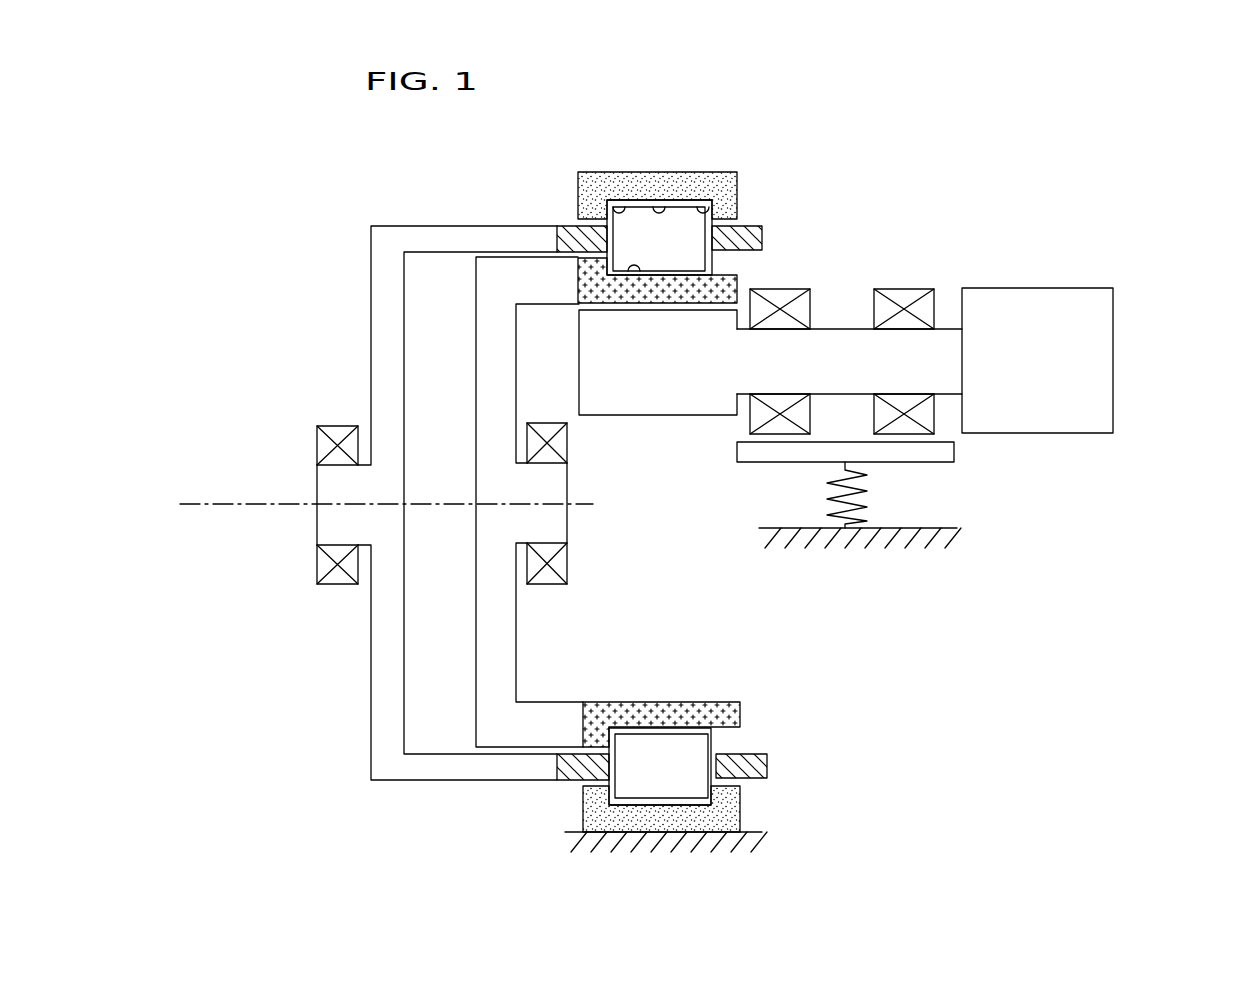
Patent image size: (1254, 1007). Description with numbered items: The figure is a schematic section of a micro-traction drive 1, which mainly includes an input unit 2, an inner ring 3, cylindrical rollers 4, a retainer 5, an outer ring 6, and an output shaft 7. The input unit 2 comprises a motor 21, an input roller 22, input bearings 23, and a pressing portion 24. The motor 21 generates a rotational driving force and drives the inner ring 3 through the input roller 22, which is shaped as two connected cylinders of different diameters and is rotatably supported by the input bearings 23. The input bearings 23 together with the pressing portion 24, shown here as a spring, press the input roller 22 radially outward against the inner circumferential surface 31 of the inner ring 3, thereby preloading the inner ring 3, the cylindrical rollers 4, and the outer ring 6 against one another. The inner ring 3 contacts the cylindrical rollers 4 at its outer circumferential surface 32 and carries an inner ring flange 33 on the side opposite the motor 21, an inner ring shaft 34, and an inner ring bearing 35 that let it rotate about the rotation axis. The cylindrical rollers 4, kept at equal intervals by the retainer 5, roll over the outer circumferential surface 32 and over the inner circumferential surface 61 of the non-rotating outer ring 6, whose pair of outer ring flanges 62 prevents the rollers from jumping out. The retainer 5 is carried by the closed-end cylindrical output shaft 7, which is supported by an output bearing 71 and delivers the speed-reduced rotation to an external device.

The micro-traction drive 1 is at (288, 181).
The input unit 2 is at (963, 252).
The inner ring 3 is at (762, 695).
The cylindrical rollers 4 is at (700, 742).
The retainer 5 is at (767, 765).
The outer ring 6 is at (762, 808).
The output shaft 7 is at (371, 323).
The motor 21 is at (1113, 355).
The input roller 22 is at (660, 416).
The input bearings 23 is at (783, 289).
The pressing portion 24 is at (867, 500).
The inner circumferential surface 31 is at (703, 303).
The outer circumferential surface 32 is at (638, 270).
The inner ring flange 33 is at (617, 738).
The inner ring shaft 34 is at (516, 634).
The inner ring bearing 35 is at (567, 567).
The inner circumferential surface 61 is at (660, 207).
The outer ring flanges 62 is at (620, 207).
The output bearing 71 is at (317, 565).